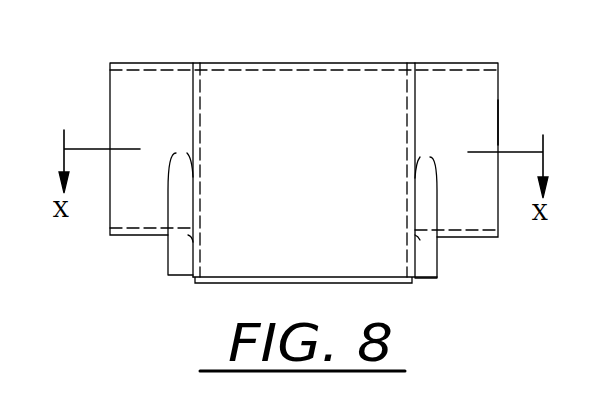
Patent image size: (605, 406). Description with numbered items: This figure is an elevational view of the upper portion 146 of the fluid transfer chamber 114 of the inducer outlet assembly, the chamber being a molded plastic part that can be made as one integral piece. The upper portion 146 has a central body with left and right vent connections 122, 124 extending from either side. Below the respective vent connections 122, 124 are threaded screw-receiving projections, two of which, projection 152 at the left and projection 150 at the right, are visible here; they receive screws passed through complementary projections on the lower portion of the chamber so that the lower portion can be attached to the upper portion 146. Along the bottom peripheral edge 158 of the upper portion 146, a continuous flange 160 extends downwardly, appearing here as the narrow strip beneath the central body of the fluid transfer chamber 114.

The fluid transfer chamber 114 is at (295, 62).
The left vent connection 122 is at (141, 62).
The right vent connection 124 is at (462, 63).
The upper portion 146 is at (506, 122).
The threaded screw-receiving projection 150 is at (437, 253).
The threaded screw-receiving projection 152 is at (168, 252).
The bottom peripheral edge 158 is at (590, 305).
The continuous flange 160 is at (203, 283).